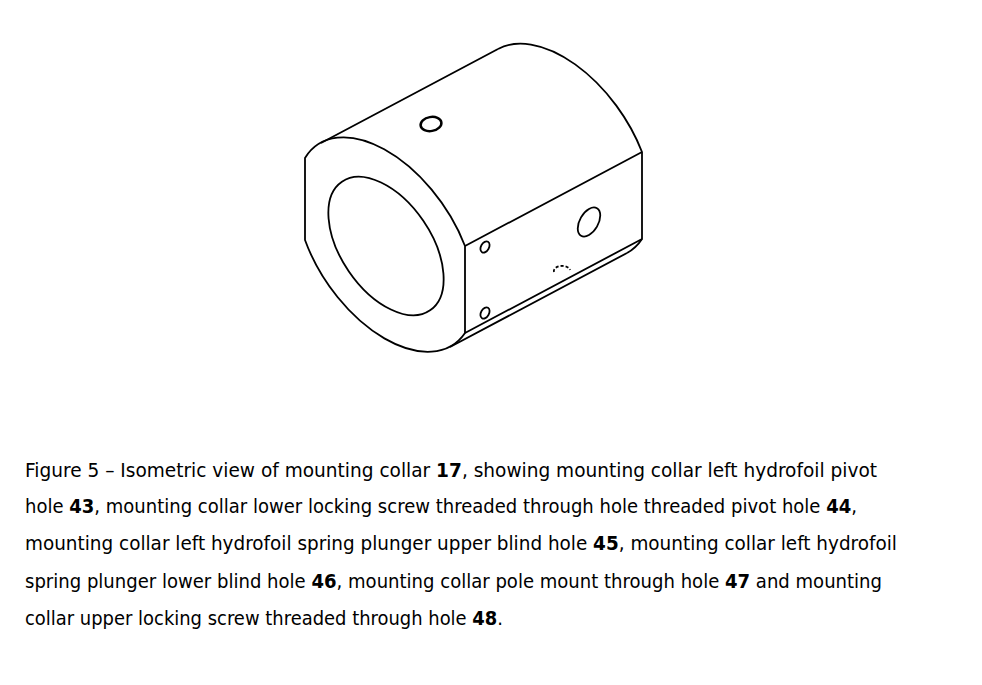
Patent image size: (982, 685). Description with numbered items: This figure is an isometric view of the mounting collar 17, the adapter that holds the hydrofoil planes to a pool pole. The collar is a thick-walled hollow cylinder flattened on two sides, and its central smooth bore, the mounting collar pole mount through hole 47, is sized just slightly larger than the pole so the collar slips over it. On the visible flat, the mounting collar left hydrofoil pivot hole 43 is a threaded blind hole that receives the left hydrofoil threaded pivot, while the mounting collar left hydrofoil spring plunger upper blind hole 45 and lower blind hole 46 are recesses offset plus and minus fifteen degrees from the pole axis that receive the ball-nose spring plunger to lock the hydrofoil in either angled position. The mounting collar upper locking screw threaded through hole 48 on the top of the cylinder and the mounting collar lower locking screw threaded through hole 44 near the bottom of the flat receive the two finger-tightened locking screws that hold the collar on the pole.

The mounting collar 17 is at (538, 117).
The mounting collar left hydrofoil pivot hole 43 is at (602, 212).
The mounting collar lower locking screw threaded through hole 44 is at (570, 271).
The mounting collar left hydrofoil spring plunger upper blind hole 45 is at (488, 251).
The mounting collar left hydrofoil spring plunger lower blind hole 46 is at (489, 316).
The mounting collar pole mount through hole 47 is at (380, 240).
The mounting collar upper locking screw threaded through hole 48 is at (418, 120).